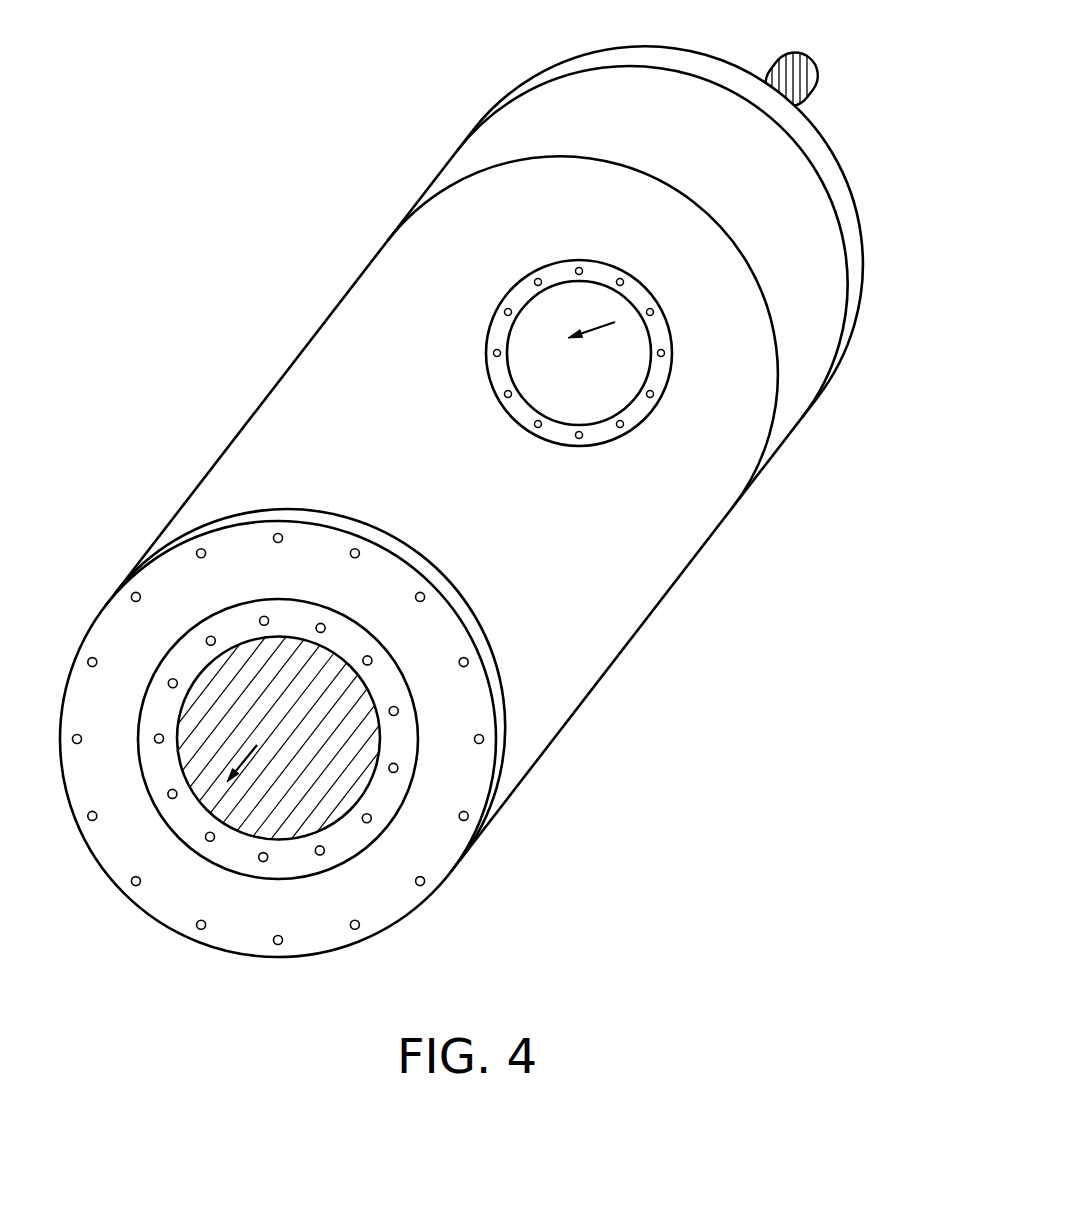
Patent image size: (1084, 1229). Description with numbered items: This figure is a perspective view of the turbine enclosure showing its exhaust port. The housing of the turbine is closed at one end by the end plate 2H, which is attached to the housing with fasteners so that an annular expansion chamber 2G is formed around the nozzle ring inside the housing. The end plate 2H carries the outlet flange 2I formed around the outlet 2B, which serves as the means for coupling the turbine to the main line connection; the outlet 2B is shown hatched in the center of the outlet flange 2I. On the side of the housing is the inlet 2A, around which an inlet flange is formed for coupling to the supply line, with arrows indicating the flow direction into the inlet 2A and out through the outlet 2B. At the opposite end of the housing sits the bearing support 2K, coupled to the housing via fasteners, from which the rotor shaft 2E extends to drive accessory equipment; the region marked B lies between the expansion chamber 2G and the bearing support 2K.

The inlet 2A is at (601, 392).
The outlet 2B is at (342, 750).
The rotor shaft 2E is at (816, 84).
The annular expansion chamber 2G is at (650, 568).
The end plate 2H is at (437, 847).
The outlet flange 2I is at (295, 860).
The bearing support 2K is at (813, 240).
The region B is at (801, 382).